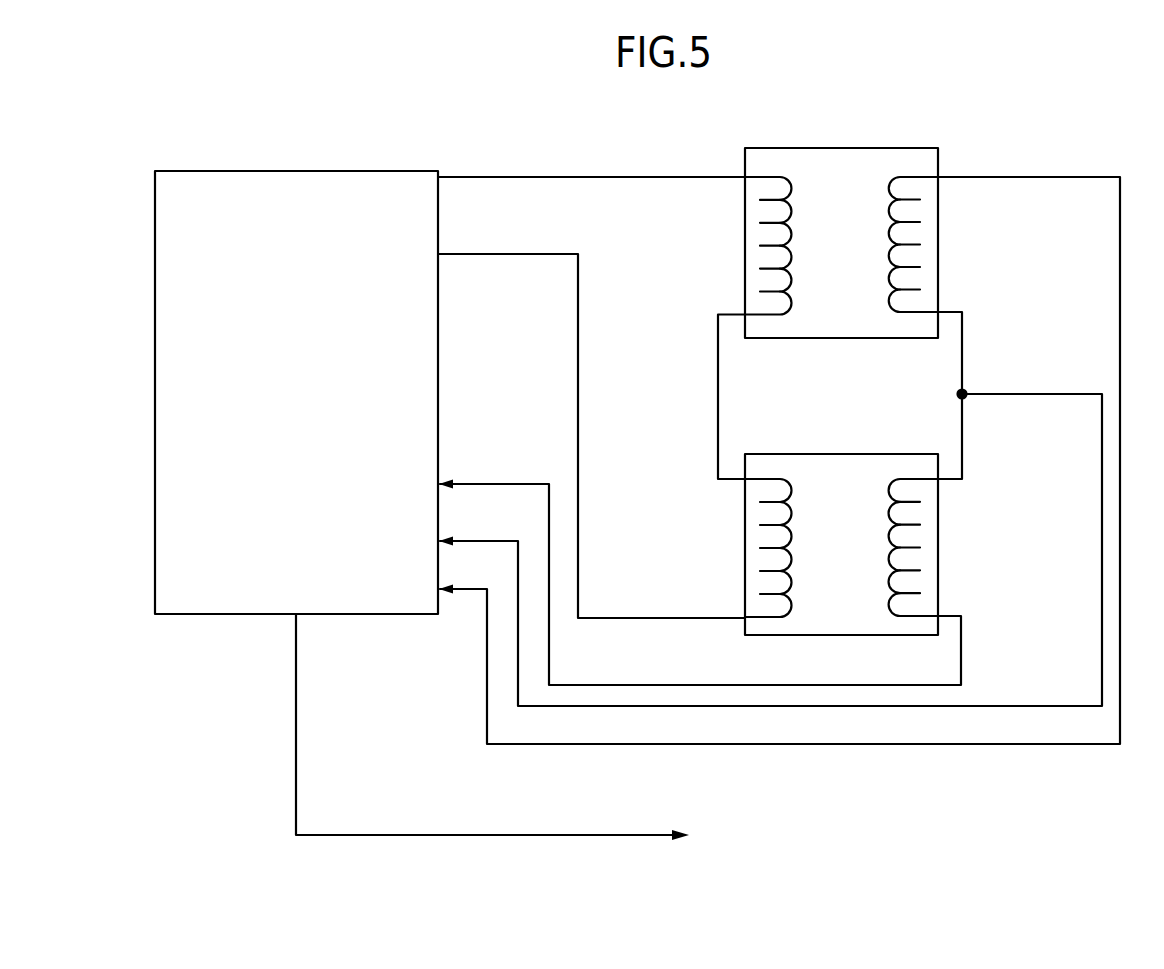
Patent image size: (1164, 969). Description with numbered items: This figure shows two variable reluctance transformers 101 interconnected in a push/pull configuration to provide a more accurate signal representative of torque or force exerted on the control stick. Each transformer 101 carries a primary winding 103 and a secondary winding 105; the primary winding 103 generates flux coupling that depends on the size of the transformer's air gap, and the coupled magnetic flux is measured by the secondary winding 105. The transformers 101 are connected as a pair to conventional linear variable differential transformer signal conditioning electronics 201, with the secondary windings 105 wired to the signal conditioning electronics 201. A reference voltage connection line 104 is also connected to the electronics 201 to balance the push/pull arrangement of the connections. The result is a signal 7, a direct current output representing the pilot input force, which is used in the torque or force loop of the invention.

The linear variable differential transformer signal conditioning electronics 201 is at (333, 171).
The primary winding 103 is at (551, 177).
The variable reluctance transformer 101 is at (856, 137).
The secondary winding 105 is at (1062, 177).
The reference voltage connection line 104 is at (987, 394).
The signal 7 is at (480, 836).